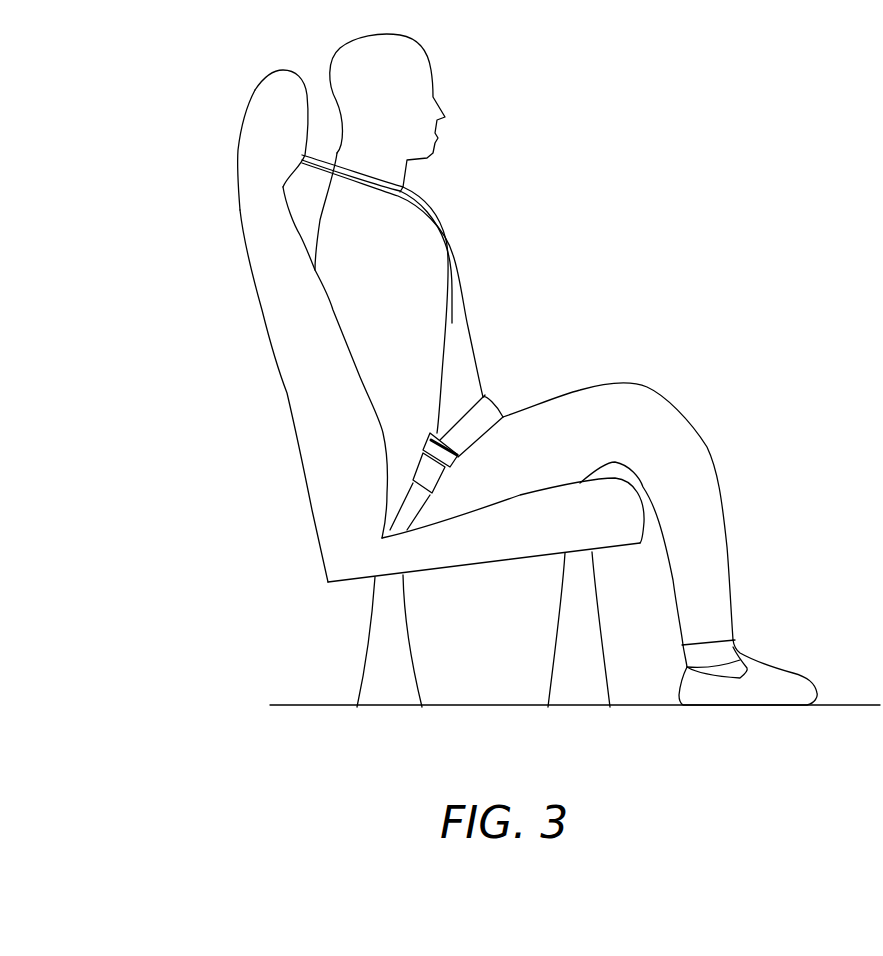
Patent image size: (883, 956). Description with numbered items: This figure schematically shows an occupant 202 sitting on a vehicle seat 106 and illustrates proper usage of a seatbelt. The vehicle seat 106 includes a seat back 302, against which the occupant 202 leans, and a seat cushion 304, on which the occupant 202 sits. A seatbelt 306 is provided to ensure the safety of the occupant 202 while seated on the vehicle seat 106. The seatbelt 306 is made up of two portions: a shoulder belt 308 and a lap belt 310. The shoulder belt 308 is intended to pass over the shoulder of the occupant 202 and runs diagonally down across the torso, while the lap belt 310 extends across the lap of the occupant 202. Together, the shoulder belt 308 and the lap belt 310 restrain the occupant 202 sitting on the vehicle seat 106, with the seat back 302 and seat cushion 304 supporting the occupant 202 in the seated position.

The vehicle seat 106 is at (250, 92).
The seat back 302 is at (277, 309).
The seat cushion 304 is at (483, 552).
The occupant 202 is at (660, 400).
The seatbelt 306 is at (468, 263).
The shoulder belt 308 is at (457, 322).
The lap belt 310 is at (487, 410).